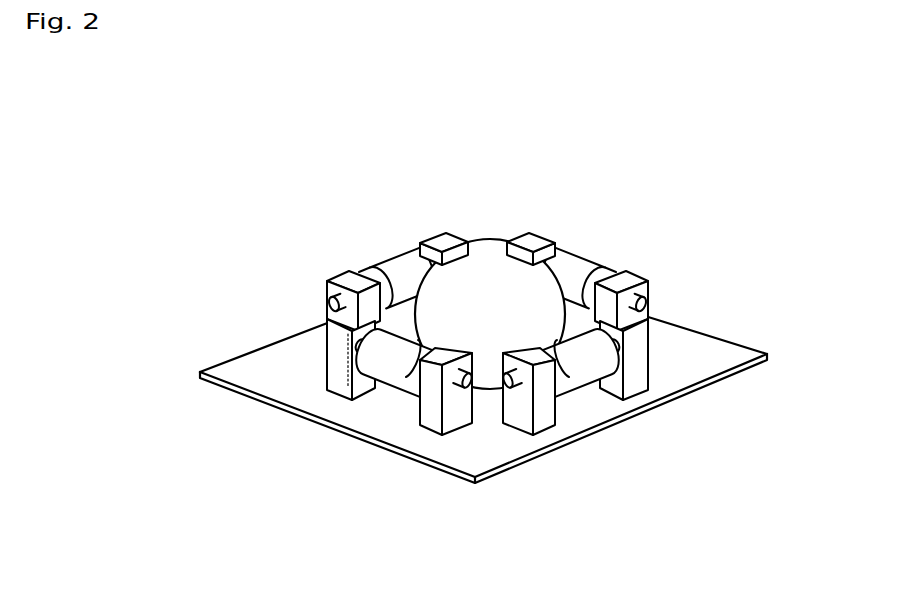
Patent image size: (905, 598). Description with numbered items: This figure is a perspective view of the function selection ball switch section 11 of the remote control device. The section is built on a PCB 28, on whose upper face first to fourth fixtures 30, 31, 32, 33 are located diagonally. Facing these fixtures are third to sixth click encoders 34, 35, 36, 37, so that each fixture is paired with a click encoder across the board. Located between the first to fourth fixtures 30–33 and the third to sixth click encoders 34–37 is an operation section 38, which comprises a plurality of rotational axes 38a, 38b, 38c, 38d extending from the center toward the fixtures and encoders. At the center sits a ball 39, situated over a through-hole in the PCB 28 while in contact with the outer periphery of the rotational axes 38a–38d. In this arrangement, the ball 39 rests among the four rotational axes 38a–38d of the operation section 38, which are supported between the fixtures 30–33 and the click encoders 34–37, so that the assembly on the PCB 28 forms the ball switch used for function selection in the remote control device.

The function selection ball switch section 11 is at (368, 150).
The PCB 28 is at (737, 357).
The first fixture 30 is at (333, 383).
The second fixture 31 is at (437, 243).
The third fixture 32 is at (647, 287).
The fourth fixture 33 is at (520, 418).
The third click encoder 34 is at (433, 428).
The fourth click encoder 35 is at (347, 277).
The fifth click encoder 36 is at (540, 238).
The sixth click encoder 37 is at (647, 370).
The operation section 38 is at (478, 436).
The rotational axis 38a is at (392, 375).
The rotational axis 38b is at (395, 257).
The rotational axis 38c is at (590, 258).
The rotational axis 38d is at (578, 375).
The ball 39 is at (487, 247).